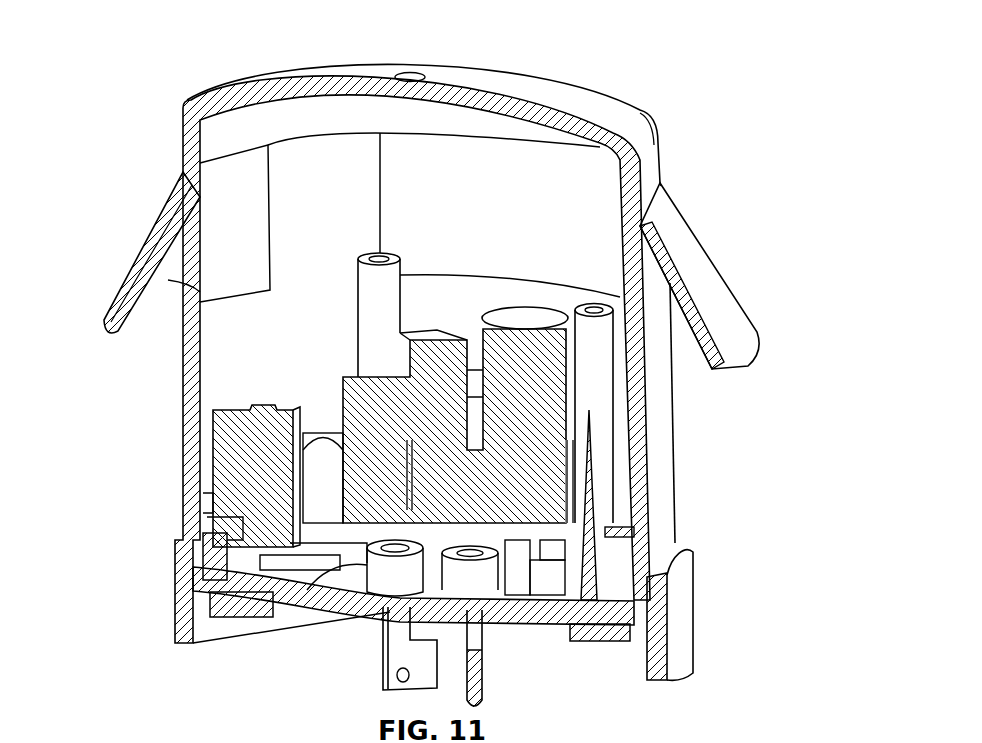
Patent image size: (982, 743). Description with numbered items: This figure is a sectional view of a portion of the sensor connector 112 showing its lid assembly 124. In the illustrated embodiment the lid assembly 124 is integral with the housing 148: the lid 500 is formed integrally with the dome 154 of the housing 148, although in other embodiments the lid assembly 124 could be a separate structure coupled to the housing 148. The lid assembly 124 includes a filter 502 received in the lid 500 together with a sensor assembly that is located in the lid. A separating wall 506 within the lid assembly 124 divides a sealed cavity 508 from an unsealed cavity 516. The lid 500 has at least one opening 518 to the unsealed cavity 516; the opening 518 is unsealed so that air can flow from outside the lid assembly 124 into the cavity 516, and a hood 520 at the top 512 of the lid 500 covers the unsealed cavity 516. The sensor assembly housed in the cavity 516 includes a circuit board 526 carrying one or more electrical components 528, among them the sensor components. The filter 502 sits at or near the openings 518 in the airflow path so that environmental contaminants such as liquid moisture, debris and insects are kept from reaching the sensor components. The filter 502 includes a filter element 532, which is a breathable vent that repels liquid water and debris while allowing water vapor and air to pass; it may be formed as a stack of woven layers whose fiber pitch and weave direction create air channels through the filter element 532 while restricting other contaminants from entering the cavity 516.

The sensor connector 112 is at (738, 137).
The lid assembly 124 is at (667, 118).
The housing 148 is at (667, 490).
The dome 154 is at (657, 425).
The lid 500 is at (183, 145).
The filter 502 is at (530, 157).
The separating wall 506 is at (297, 397).
The sealed cavity 508 is at (220, 517).
The top 512 is at (357, 70).
The unsealed cavity 516 is at (318, 182).
The opening 518 is at (177, 297).
The hood 520 is at (153, 255).
The circuit board 526 is at (630, 532).
The electrical components 528 is at (337, 400).
The filter element 532 is at (450, 157).